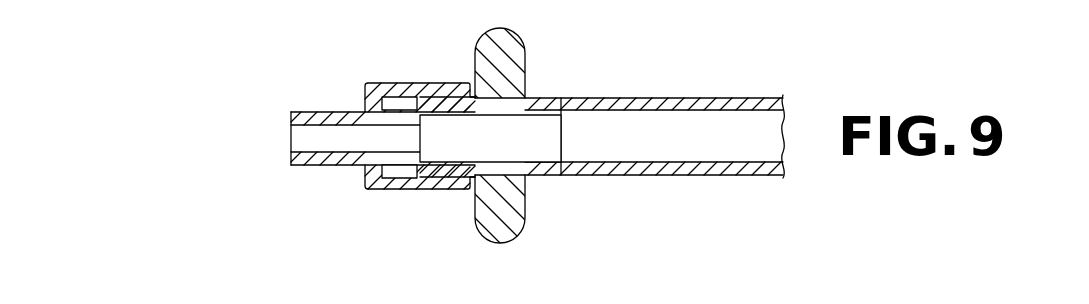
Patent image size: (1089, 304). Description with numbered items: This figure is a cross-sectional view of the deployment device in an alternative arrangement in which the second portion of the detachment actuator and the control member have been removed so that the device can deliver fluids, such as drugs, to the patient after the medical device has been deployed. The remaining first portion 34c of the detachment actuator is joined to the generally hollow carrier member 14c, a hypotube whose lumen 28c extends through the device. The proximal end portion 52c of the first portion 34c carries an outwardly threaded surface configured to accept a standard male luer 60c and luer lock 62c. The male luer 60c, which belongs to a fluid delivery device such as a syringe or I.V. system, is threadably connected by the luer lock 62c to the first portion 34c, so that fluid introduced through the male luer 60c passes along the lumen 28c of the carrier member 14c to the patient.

The carrier member 14c is at (673, 97).
The lumen 28c is at (634, 150).
The first portion 34c is at (523, 100).
The proximal end portion 52c is at (407, 95).
The male luer 60c is at (418, 150).
The luer lock 62c is at (398, 188).